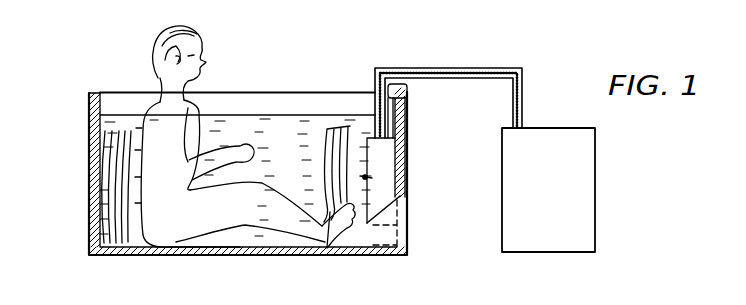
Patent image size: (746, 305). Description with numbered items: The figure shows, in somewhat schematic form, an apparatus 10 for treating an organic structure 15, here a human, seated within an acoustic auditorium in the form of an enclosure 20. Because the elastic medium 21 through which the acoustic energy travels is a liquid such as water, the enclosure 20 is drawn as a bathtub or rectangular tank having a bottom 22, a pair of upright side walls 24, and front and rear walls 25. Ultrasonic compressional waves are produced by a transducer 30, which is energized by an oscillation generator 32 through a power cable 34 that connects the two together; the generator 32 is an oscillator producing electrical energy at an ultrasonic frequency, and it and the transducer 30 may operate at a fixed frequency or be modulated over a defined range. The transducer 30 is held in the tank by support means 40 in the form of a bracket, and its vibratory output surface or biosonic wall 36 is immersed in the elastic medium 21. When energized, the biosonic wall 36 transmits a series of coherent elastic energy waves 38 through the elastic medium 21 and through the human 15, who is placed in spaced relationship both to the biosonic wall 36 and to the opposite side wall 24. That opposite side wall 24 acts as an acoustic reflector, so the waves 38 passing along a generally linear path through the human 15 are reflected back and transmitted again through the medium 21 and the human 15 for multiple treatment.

The apparatus 10 is at (77, 105).
The organic structure 15 is at (148, 58).
The enclosure 20 is at (337, 91).
The elastic medium 21 is at (258, 100).
The bottom 22 is at (257, 255).
The side walls 24 is at (89, 210).
The front and rear walls 25 is at (114, 92).
The transducer 30 is at (390, 175).
The oscillation generator 32 is at (597, 152).
The power cable 34 is at (522, 106).
The biosonic wall 36 is at (365, 177).
The elastic energy waves 38 is at (132, 222).
The support means 40 is at (408, 95).